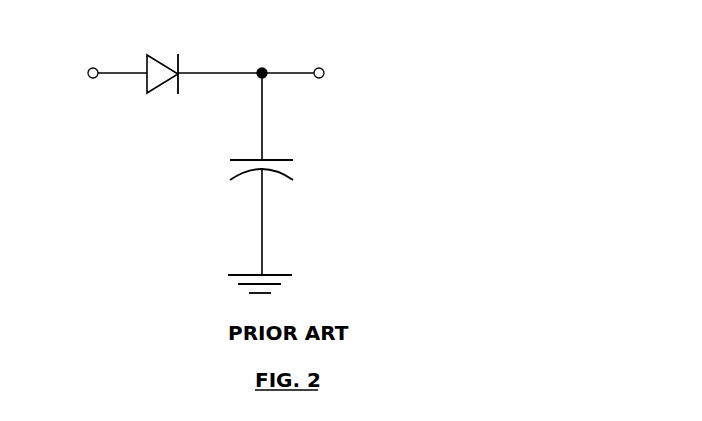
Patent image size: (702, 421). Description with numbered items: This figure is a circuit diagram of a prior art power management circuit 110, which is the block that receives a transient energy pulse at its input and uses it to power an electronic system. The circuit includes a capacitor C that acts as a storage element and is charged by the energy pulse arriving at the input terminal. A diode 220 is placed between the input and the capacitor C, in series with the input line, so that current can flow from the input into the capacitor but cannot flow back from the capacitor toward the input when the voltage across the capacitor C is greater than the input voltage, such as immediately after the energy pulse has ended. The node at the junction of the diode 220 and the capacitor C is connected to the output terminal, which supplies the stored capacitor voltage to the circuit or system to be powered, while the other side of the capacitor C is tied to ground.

The power management circuit 110 is at (288, 146).
The diode 220 is at (174, 89).
The capacitor C is at (276, 170).